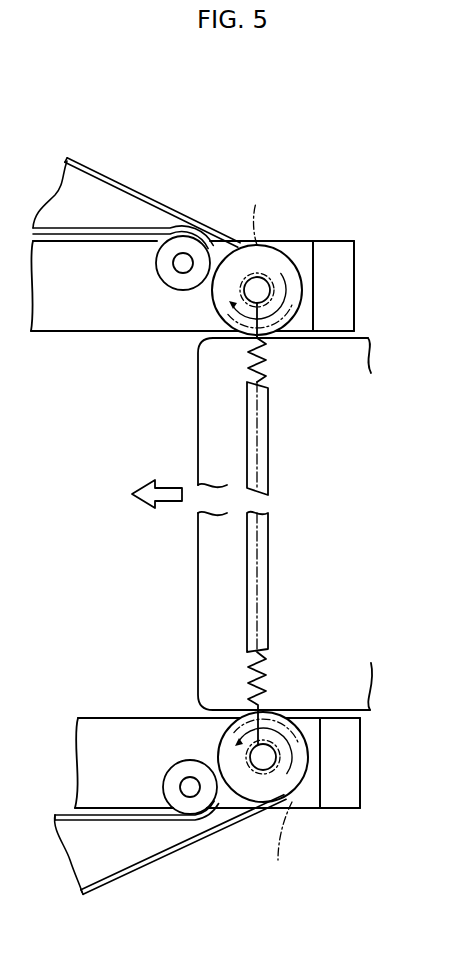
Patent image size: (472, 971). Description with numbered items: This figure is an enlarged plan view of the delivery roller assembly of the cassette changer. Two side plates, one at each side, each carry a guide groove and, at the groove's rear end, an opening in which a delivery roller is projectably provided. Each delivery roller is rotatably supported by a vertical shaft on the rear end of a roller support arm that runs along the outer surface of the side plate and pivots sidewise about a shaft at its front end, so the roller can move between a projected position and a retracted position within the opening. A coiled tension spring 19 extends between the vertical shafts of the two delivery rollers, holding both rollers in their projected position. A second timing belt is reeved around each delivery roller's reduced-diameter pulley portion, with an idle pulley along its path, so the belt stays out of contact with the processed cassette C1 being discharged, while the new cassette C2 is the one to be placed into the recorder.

The coiled tension spring 19 is at (267, 607).
The processed cassette C1 is at (198, 600).
The new cassette C2 is at (197, 393).